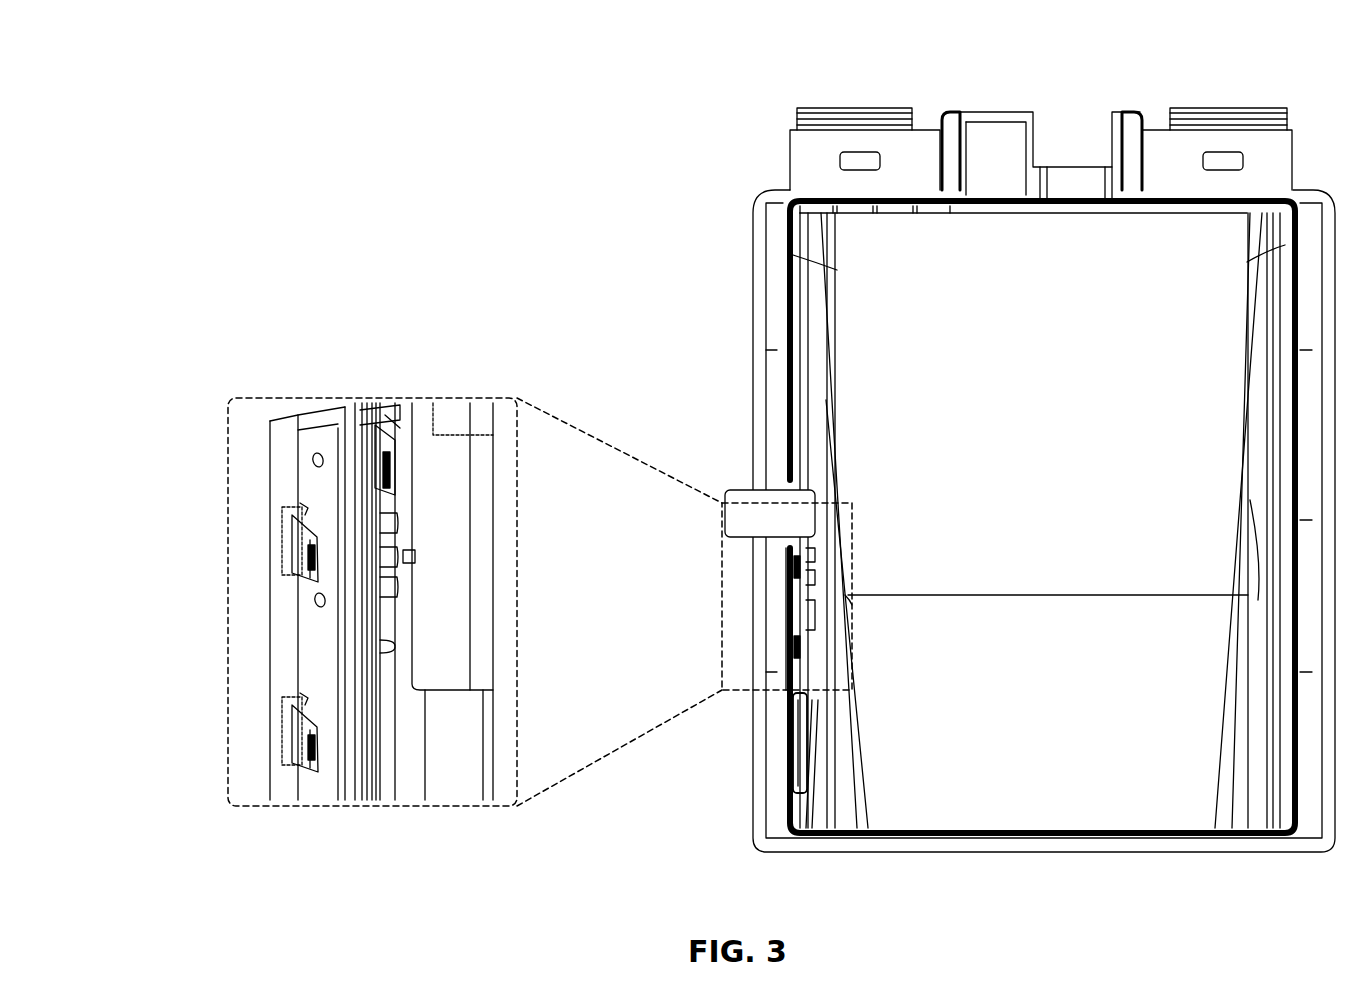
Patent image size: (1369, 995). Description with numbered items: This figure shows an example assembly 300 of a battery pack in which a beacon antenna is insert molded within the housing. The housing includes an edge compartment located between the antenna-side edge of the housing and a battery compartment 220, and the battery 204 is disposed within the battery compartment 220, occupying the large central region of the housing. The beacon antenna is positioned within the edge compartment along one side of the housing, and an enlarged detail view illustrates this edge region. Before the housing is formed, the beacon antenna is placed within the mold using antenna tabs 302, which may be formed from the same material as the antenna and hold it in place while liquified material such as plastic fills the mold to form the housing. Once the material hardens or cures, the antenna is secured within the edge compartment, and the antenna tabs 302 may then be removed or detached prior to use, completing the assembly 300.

The assembly 300 is at (243, 66).
The battery 204 is at (780, 547).
The battery compartment 220 is at (1041, 418).
The antenna tabs 302 is at (385, 445).